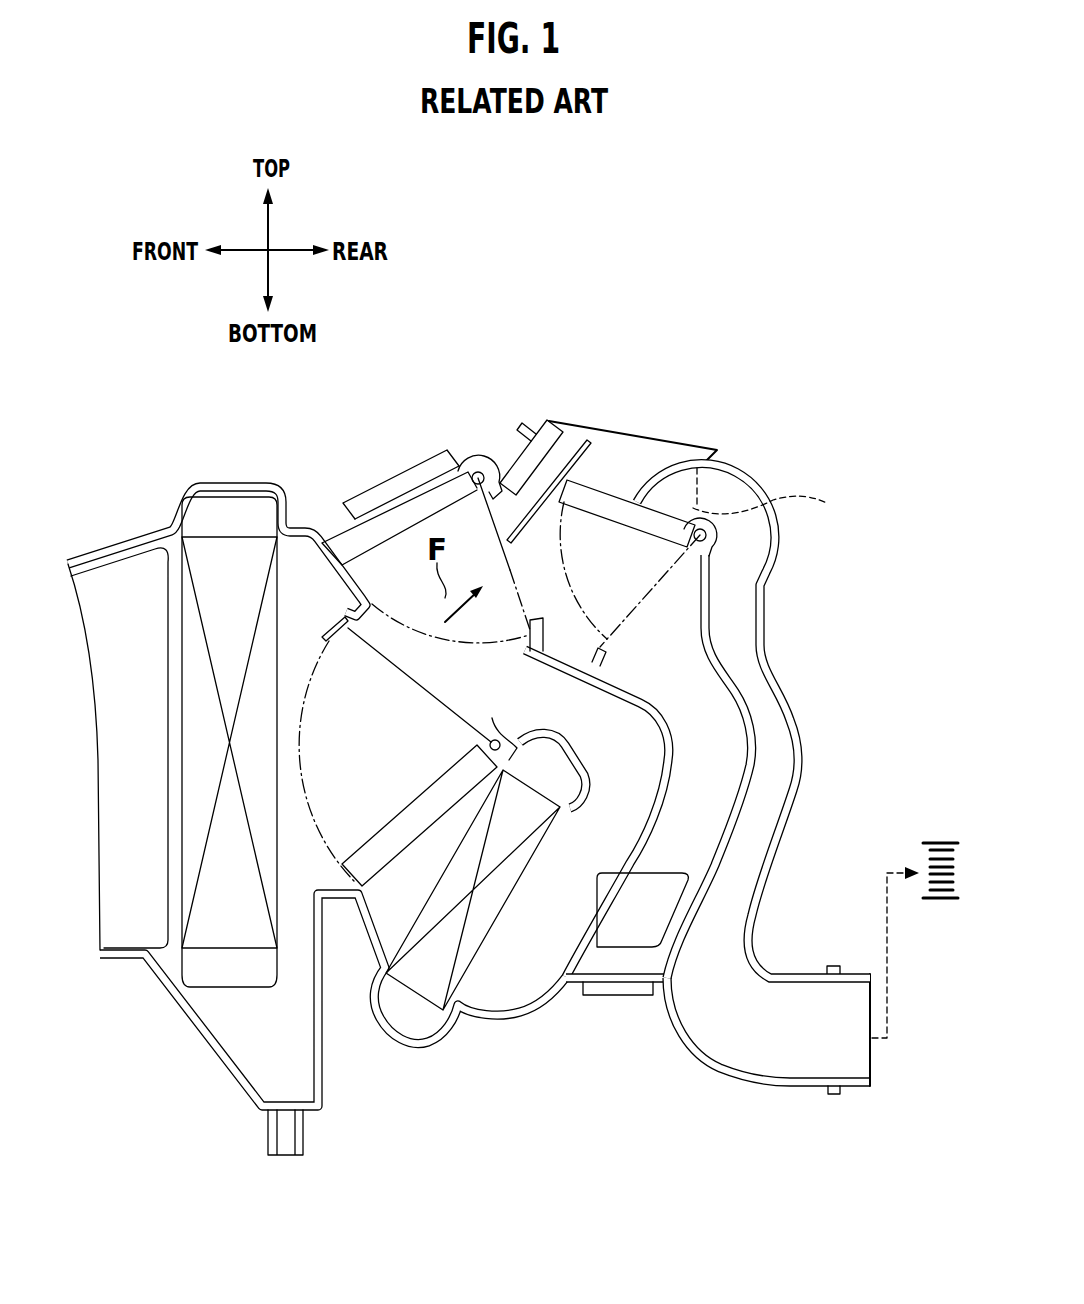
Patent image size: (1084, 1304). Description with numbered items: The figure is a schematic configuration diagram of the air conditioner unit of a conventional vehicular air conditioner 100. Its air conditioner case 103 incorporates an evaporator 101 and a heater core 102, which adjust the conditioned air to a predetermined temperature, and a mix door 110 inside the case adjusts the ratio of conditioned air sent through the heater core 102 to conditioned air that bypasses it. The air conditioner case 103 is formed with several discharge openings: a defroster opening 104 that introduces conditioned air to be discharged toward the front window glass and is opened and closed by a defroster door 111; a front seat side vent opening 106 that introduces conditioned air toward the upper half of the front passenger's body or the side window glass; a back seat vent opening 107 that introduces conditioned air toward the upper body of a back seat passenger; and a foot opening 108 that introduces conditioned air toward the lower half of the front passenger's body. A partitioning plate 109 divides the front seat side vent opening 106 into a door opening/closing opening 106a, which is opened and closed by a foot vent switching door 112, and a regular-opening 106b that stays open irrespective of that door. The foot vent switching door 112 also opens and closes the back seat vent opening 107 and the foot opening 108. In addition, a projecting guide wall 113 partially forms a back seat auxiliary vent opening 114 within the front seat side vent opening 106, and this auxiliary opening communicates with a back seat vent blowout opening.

The vehicular air conditioner 100 is at (521, 346).
The evaporator 101 is at (227, 937).
The heater core 102 is at (500, 893).
The air conditioner case 103 is at (232, 483).
The defroster opening 104 is at (418, 472).
The front seat side vent opening 106 is at (688, 336).
The door opening/closing opening 106a is at (612, 473).
The regular-opening 106b is at (532, 482).
The back seat vent opening 107 is at (783, 494).
The foot opening 108 is at (680, 583).
The partitioning plate 109 is at (512, 460).
The mix door 110 is at (400, 840).
The defroster door 111 is at (378, 518).
The foot vent switching door 112 is at (602, 510).
The projecting guide wall 113 is at (677, 467).
The back seat auxiliary vent opening 114 is at (660, 500).